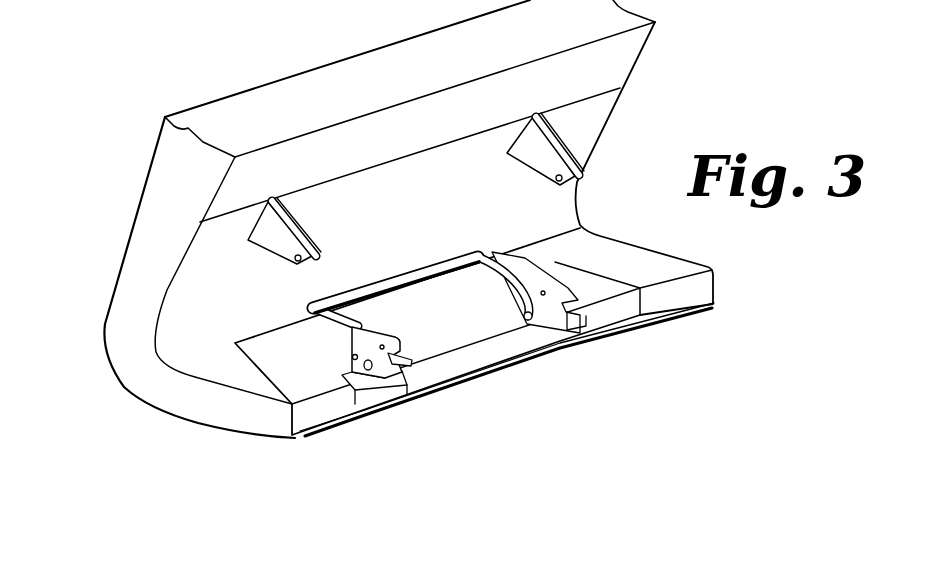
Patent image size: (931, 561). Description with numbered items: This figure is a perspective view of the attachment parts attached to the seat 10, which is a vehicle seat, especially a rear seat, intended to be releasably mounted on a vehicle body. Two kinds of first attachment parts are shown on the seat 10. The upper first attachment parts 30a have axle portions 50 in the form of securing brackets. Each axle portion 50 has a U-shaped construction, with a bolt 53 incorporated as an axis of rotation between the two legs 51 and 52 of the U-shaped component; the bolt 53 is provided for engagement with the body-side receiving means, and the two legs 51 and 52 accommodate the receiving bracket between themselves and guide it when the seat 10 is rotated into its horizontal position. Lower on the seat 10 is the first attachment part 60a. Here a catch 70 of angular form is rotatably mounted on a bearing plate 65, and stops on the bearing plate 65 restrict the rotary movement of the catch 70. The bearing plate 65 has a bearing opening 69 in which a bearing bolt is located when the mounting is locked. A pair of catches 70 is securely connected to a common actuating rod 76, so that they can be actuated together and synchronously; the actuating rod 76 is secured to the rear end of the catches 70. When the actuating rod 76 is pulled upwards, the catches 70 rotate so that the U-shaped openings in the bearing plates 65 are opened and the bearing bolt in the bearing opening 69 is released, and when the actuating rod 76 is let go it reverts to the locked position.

The seat 10 is at (175, 192).
The first attachment part 30a is at (302, 205).
The axle portion 50 is at (437, 207).
The leg 51 is at (305, 229).
The leg 52 is at (270, 233).
The bolt 53 is at (298, 263).
The first attachment part 60a is at (423, 375).
The bearing plate 65 is at (392, 388).
The bearing opening 69 is at (389, 356).
The catch 70 is at (498, 282).
The actuating rod 76 is at (401, 276).